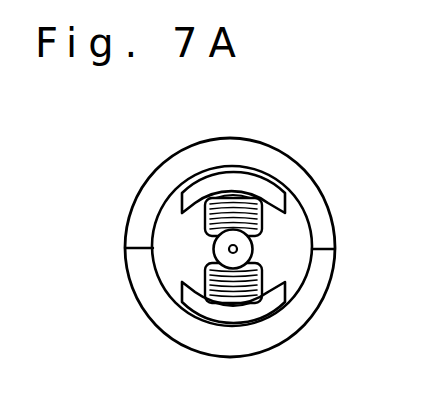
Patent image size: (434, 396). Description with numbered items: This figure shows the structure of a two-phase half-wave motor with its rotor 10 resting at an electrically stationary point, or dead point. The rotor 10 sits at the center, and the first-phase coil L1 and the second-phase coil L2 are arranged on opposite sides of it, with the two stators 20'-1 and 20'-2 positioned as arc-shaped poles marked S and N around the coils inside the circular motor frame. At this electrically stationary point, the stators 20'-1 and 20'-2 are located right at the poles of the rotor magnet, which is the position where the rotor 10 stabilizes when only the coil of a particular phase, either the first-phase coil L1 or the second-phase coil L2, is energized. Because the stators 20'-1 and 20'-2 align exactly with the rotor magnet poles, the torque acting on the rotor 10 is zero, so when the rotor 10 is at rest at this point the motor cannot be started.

The rotor 10 is at (300, 165).
The stator 20'-1 is at (169, 179).
The stator 20'-2 is at (281, 331).
The first-phase coil L1 is at (205, 222).
The second-phase coil L2 is at (263, 268).